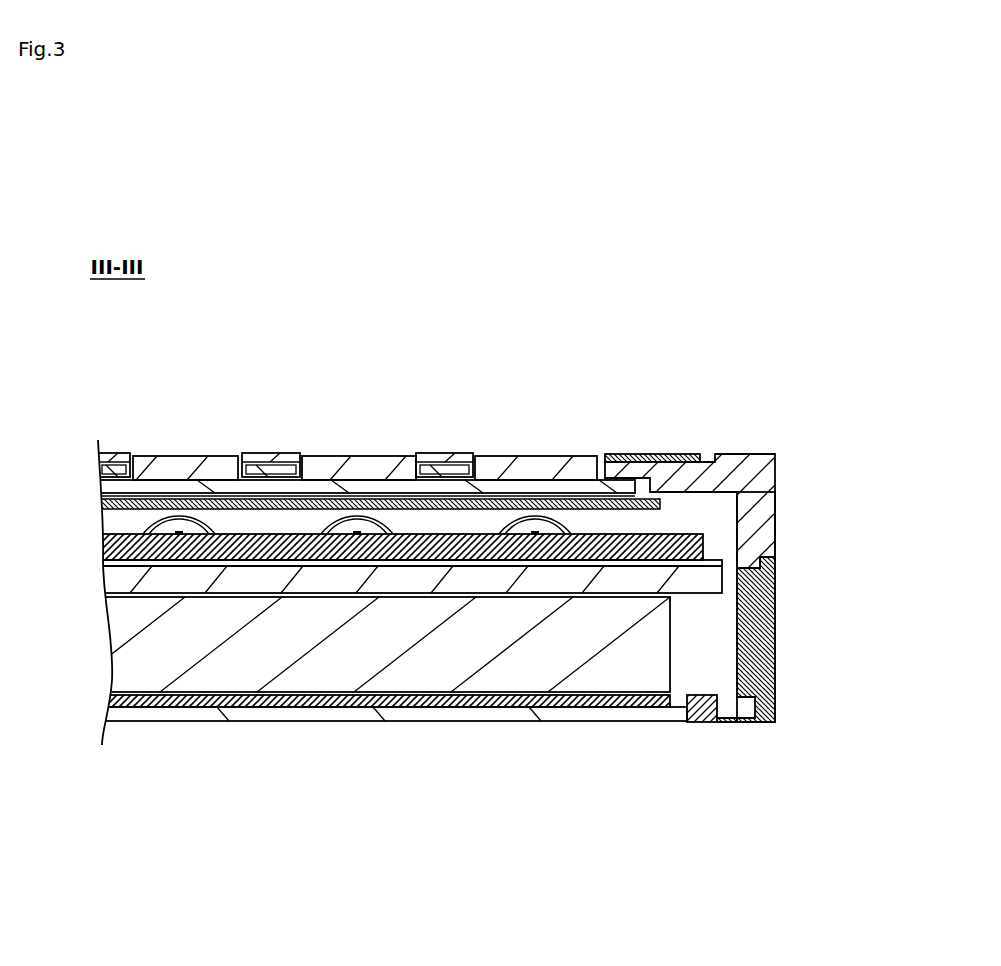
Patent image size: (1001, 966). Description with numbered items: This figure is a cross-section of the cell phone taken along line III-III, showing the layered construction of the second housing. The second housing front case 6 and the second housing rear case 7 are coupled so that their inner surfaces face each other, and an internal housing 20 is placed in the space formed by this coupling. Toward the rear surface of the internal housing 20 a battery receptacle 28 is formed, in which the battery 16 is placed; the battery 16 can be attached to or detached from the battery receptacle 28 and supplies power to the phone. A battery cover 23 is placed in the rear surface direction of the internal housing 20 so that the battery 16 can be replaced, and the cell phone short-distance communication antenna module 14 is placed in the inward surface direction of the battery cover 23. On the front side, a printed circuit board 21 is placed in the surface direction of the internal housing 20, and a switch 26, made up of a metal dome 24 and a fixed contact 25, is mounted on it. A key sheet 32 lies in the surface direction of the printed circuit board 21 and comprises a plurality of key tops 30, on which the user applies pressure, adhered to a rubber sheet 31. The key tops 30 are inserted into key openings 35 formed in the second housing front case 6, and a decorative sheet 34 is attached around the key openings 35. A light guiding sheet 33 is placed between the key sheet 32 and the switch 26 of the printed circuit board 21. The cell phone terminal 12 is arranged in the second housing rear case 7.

The second housing front case 6 is at (720, 480).
The second housing rear case 7 is at (755, 498).
The cell phone terminal 12 is at (735, 722).
The cell phone short-distance communication antenna module 14 is at (297, 710).
The battery 16 is at (495, 665).
The internal housing 20 is at (650, 570).
The printed circuit board 21 is at (565, 560).
The battery cover 23 is at (440, 712).
The metal dome 24 is at (202, 558).
The fixed contact 25 is at (173, 558).
The switch 26 is at (381, 678).
The battery receptacle 28 is at (700, 643).
The key tops 30 is at (173, 467).
The rubber sheet 31 is at (213, 489).
The key sheet 32 is at (347, 417).
The light guiding sheet 33 is at (266, 500).
The decorative sheet 34 is at (617, 461).
The key openings 35 is at (455, 462).